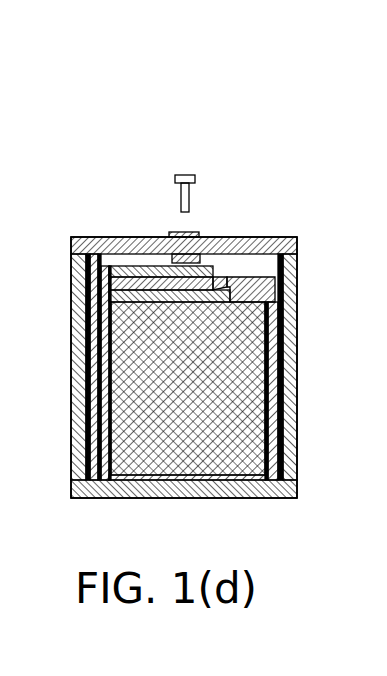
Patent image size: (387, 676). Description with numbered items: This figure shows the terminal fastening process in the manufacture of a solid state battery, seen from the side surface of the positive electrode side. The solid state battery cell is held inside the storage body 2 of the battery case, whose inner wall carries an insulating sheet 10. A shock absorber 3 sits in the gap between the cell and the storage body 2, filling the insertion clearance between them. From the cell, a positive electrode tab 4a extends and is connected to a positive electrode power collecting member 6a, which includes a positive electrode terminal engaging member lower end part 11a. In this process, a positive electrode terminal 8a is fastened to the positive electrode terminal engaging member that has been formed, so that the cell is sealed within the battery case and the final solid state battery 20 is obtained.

The solid state battery 20 is at (314, 113).
The storage body 2 is at (77, 390).
The shock absorber 3 is at (102, 320).
The insulating sheet 10 is at (92, 435).
The positive electrode tab 4a is at (122, 288).
The positive electrode power collecting member 6a is at (226, 277).
The positive electrode terminal engaging member lower end part 11a is at (196, 262).
The positive electrode terminal 8a is at (170, 163).